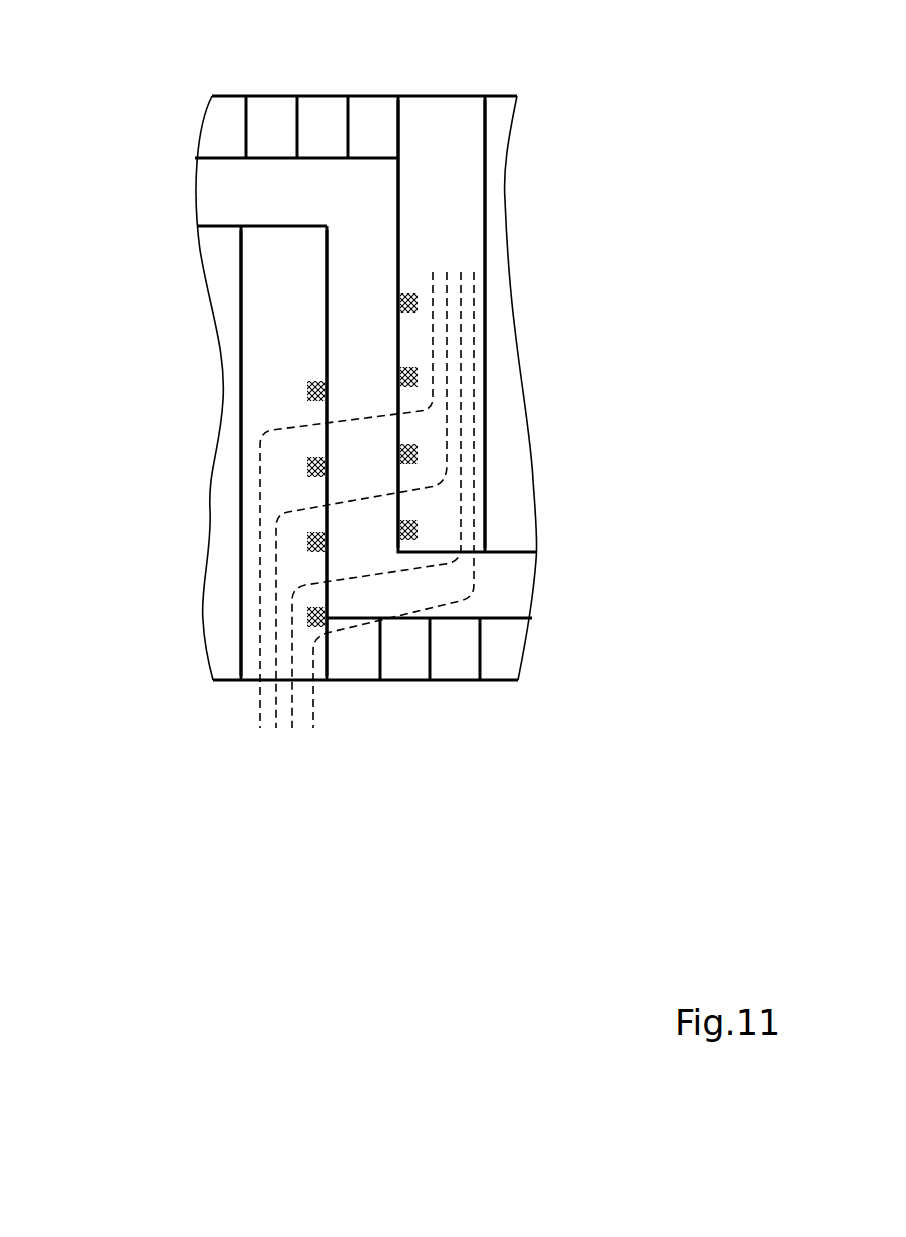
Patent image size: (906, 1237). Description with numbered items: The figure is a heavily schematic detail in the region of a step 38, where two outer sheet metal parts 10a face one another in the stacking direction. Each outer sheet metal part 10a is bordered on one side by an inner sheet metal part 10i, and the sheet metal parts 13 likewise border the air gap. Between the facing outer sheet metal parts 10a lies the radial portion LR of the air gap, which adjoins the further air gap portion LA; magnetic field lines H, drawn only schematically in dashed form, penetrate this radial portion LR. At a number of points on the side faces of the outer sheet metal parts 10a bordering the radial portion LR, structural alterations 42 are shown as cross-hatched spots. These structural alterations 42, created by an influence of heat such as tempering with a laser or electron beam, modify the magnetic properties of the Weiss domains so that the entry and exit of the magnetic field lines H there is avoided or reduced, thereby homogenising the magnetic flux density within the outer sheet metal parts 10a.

The second sheet metal part 13 is at (320, 112).
The step 38 is at (365, 192).
The outer sheet metal part 10a is at (460, 143).
The inner sheet metal part 10i is at (497, 207).
The air gap portion LA is at (218, 183).
The radial portion of the air gap LR is at (366, 264).
The structural alteration 42 is at (313, 391).
The magnetic field lines H is at (280, 733).